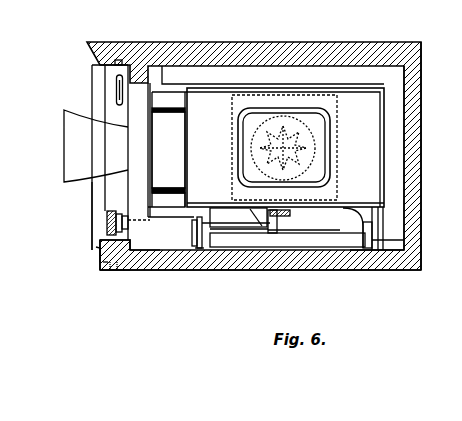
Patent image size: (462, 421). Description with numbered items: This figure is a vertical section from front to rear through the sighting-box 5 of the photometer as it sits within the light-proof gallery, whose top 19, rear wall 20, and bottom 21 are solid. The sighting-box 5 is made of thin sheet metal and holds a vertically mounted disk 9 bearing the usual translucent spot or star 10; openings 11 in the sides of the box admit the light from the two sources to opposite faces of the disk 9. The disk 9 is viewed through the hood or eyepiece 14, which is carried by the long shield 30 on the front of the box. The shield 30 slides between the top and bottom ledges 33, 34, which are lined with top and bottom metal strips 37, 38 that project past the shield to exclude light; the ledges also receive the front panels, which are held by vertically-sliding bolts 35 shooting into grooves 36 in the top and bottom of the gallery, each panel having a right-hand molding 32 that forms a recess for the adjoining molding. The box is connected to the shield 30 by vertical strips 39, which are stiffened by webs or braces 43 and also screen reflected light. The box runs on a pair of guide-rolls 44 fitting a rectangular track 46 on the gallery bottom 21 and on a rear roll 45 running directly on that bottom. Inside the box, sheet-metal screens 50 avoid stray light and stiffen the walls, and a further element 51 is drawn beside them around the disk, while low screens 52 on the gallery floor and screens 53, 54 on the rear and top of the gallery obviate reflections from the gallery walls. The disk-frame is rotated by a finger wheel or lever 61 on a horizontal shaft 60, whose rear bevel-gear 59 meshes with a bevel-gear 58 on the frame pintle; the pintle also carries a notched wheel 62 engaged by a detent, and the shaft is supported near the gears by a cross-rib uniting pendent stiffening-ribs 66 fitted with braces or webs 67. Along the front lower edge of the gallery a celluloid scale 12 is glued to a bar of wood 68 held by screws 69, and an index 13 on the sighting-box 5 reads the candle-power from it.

The sighting-box 5 is at (285, 147).
The disk 9 is at (279, 147).
The translucent spot or star 10 is at (287, 147).
The openings 11 is at (332, 155).
The scale 12 is at (100, 262).
The index 13 is at (96, 248).
The hood or eyepiece 14 is at (96, 146).
The top of the gallery 19 is at (237, 42).
The rear wall of the gallery 20 is at (421, 145).
The bottom of the gallery 21 is at (345, 270).
The shield 30 is at (137, 168).
The right-hand molding 32 is at (97, 190).
The top ledge 33 is at (92, 71).
The bottom ledge 34 is at (139, 268).
The vertically-sliding bolts 35 is at (116, 98).
The grooves 36 is at (119, 60).
The top metal strip 37 is at (155, 67).
The bottom metal strip 38 is at (153, 262).
The vertical strips 39 is at (171, 187).
The webs or braces 43 is at (169, 149).
The guide-rolls 44 is at (236, 237).
The rear roll 45 is at (383, 240).
The track 46 is at (211, 259).
The screens 50 is at (332, 114).
The rounded frame 51 is at (327, 143).
The low screens 52 is at (287, 242).
The rear screen 53 is at (396, 191).
The top screen 54 is at (273, 74).
The bevel-gear 58 is at (295, 221).
The bevel-gear 59 is at (304, 241).
The horizontal shaft 60 is at (147, 220).
The finger wheel or lever 61 is at (107, 221).
The wheel 62 is at (362, 257).
The pendent stiffening-ribs 66 is at (357, 253).
The braces or webs 67 is at (238, 217).
The bar of wood 68 is at (103, 270).
The screws 69 is at (105, 274).